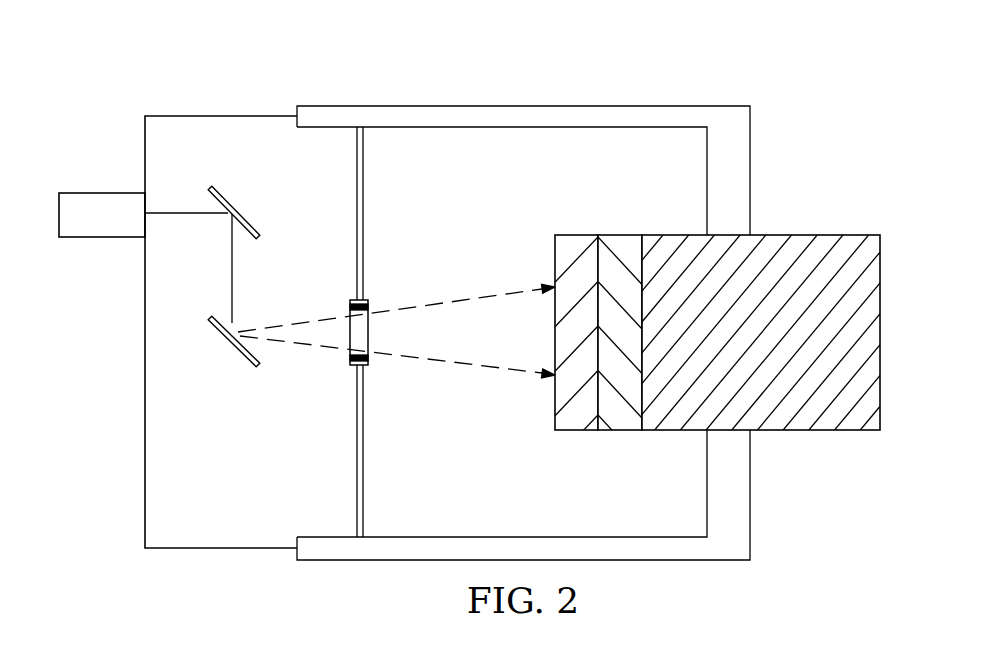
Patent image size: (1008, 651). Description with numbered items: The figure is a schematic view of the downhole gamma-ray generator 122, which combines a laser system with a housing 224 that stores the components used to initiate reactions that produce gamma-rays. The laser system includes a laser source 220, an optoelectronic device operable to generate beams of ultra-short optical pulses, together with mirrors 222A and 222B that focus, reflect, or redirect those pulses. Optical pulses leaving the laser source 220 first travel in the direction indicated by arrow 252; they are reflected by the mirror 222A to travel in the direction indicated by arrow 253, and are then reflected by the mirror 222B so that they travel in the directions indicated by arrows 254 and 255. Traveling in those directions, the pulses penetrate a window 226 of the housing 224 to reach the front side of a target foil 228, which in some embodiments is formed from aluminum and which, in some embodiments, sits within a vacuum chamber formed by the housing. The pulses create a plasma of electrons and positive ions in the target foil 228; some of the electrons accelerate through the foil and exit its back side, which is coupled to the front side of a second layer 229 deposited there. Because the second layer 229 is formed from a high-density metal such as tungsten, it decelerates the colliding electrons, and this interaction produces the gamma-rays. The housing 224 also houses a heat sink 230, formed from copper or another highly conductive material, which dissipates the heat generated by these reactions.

The downhole gamma-ray generator 122 is at (172, 54).
The laser source 220 is at (103, 192).
The housing 224 is at (525, 115).
The arrow 252 is at (180, 212).
The arrow 253 is at (232, 273).
The mirror 222A is at (237, 208).
The mirror 222B is at (232, 345).
The window 226 is at (331, 371).
The arrow 254 is at (430, 303).
The arrow 255 is at (430, 360).
The target foil 228 is at (577, 423).
The second layer 229 is at (622, 423).
The heat sink 230 is at (812, 423).